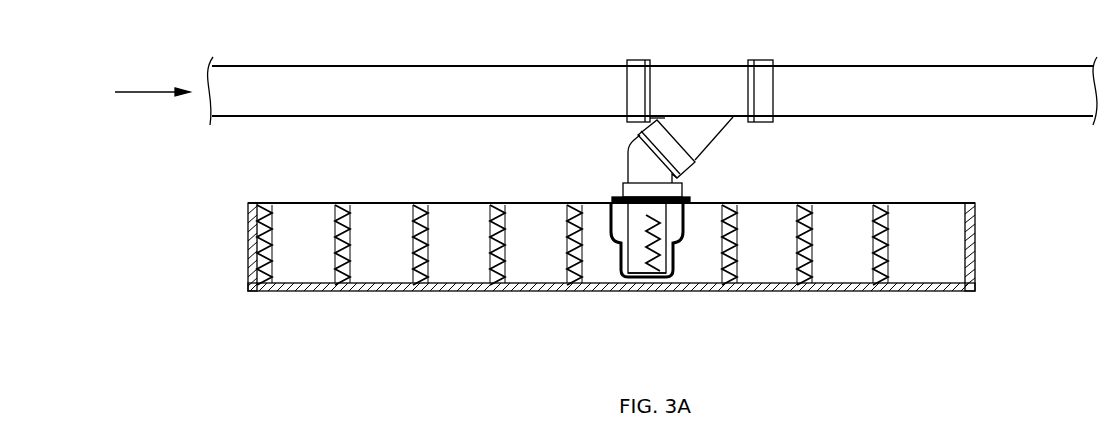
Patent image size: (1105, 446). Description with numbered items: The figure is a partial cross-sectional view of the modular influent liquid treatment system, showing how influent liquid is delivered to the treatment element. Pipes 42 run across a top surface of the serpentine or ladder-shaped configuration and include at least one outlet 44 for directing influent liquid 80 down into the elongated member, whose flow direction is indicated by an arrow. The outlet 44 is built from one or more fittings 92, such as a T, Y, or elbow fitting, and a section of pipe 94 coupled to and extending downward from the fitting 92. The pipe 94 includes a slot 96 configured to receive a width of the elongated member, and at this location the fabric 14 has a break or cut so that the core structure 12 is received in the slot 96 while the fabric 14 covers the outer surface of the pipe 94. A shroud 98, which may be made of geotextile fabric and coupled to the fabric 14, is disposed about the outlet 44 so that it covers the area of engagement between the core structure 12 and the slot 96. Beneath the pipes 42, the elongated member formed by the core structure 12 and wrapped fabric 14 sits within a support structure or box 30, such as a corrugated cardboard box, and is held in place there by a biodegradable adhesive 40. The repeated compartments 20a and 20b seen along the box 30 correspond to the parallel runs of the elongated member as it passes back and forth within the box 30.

The core structure 12 is at (275, 205).
The wrapped fabric 14 is at (648, 283).
The upper slot portion 20a is at (335, 245).
The lower slot portion 20b is at (343, 292).
The box 30 is at (972, 243).
The biodegradable adhesive 40 is at (355, 285).
The pipes 42 is at (980, 65).
The outlet 44 is at (690, 58).
The influent liquid 80 is at (151, 92).
The fitting 92 is at (661, 65).
The section of pipe 94 is at (705, 203).
The slot 96 is at (670, 262).
The shroud 98 is at (620, 235).